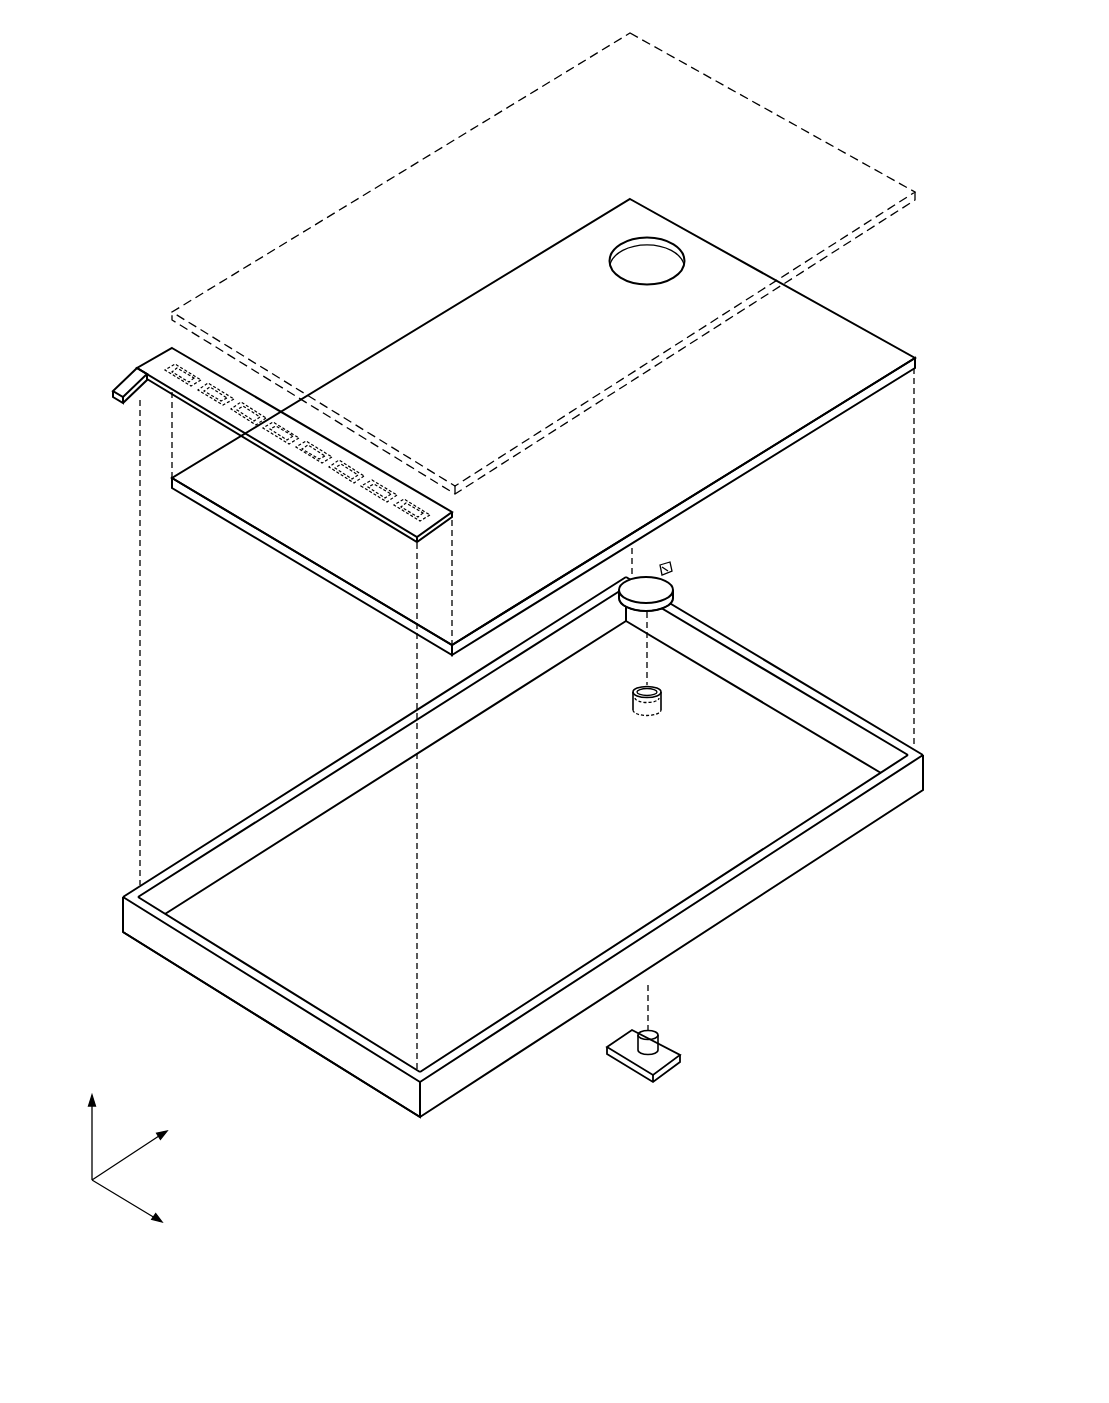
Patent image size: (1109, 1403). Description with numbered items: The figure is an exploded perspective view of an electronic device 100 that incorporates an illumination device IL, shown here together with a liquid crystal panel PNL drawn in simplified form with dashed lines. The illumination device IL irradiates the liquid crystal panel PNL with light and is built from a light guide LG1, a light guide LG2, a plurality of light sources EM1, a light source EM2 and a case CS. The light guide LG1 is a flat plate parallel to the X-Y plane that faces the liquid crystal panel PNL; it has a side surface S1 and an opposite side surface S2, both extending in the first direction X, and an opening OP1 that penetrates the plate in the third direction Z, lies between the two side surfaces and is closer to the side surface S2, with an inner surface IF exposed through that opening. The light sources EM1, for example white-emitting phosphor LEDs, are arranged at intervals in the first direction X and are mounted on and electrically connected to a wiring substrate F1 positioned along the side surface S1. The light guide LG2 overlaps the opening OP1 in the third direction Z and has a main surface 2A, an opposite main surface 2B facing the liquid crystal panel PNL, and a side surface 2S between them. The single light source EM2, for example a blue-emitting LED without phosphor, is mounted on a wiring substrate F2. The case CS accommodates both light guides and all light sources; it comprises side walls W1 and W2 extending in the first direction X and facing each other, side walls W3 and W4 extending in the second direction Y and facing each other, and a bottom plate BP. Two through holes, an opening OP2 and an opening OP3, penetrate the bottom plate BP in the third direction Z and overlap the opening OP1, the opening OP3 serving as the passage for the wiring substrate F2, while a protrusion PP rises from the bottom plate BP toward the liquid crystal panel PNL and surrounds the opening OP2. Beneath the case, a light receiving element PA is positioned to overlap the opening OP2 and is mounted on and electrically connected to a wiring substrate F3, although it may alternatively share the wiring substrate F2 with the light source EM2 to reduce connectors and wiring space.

The electronic device 100 is at (817, 45).
The liquid crystal panel PNL is at (808, 140).
The light guide LG1 is at (571, 415).
The side surface S2 is at (845, 307).
The side surface S1 is at (290, 560).
The opening OP1 is at (684, 230).
The inner surface IF is at (641, 242).
The wiring substrate F1 is at (282, 421).
The light sources EM1 is at (335, 478).
The light guide LG2 is at (681, 566).
The main surface 2B is at (652, 575).
The main surface 2A is at (655, 615).
The side surface 2S is at (623, 607).
The wiring substrate F2 is at (723, 567).
The light source EM2 is at (675, 590).
The protrusion PP is at (633, 734).
The opening OP2 is at (633, 735).
The opening OP3 is at (669, 706).
The bottom plate BP is at (523, 888).
The side wall W1 is at (278, 985).
The side wall W2 is at (856, 717).
The side wall W3 is at (355, 757).
The side wall W4 is at (717, 883).
The case CS is at (420, 1118).
The illumination device IL is at (339, 1104).
The light receiving element PA is at (640, 1048).
The wiring substrate F3 is at (667, 1079).